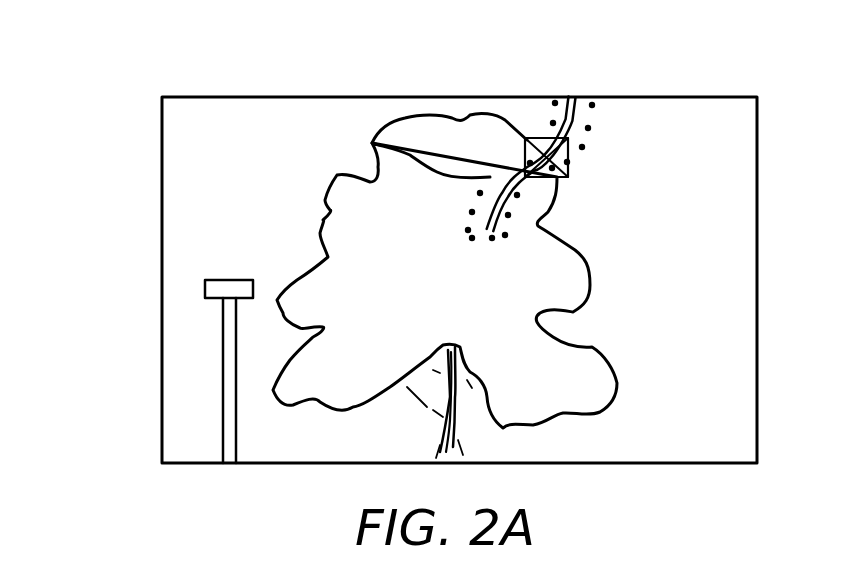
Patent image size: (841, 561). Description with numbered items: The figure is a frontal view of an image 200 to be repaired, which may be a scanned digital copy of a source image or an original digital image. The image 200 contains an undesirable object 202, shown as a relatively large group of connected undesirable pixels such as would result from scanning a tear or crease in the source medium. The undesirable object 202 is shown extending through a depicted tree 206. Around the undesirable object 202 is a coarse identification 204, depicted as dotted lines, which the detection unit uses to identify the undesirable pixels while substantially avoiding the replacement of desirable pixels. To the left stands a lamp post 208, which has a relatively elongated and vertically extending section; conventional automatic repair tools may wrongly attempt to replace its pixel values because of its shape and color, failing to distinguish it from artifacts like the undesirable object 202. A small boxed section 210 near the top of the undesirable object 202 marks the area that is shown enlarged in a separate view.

The image 200 is at (132, 46).
The undesirable object 202 is at (553, 213).
The coarse identification 204 is at (370, 143).
The tree 206 is at (600, 281).
The lamp post 208 is at (222, 377).
The section 210 is at (568, 160).